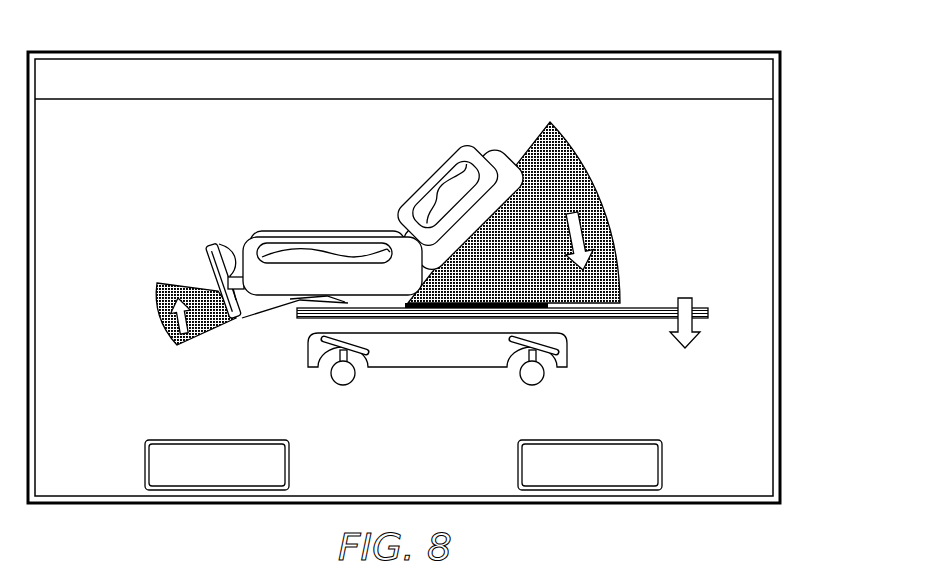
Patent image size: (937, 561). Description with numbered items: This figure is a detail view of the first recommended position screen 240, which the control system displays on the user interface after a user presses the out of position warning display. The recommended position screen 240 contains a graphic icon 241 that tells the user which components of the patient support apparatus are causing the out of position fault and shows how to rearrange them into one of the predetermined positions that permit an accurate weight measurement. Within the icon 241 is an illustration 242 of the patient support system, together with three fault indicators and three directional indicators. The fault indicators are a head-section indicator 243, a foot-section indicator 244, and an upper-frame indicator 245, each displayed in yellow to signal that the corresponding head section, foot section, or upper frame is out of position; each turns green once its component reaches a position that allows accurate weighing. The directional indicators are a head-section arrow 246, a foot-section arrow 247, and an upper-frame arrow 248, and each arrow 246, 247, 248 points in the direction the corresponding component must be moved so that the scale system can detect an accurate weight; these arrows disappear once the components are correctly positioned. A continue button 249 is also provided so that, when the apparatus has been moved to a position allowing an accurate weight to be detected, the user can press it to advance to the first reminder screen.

The recommended position screen 240 is at (571, 47).
The graphic icon 241 is at (386, 257).
The illustration 242 is at (273, 231).
The head-section indicator 243 is at (545, 206).
The foot-section indicator 244 is at (152, 327).
The upper-frame indicator 245 is at (648, 320).
The head-section arrow 246 is at (592, 237).
The foot-section arrow 247 is at (162, 327).
The upper-frame arrow 248 is at (702, 299).
The continue button 249 is at (217, 438).